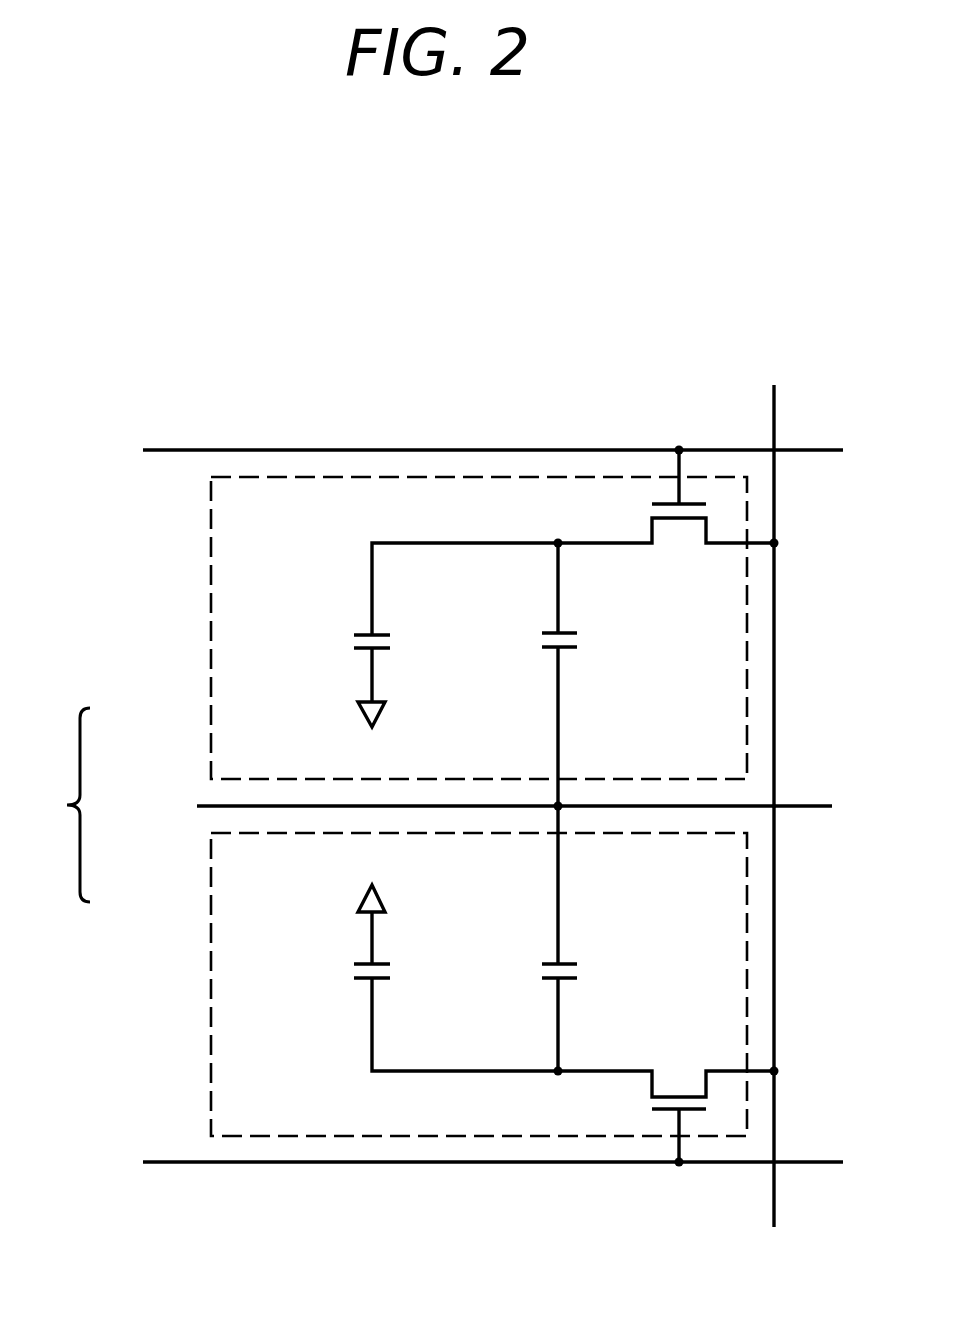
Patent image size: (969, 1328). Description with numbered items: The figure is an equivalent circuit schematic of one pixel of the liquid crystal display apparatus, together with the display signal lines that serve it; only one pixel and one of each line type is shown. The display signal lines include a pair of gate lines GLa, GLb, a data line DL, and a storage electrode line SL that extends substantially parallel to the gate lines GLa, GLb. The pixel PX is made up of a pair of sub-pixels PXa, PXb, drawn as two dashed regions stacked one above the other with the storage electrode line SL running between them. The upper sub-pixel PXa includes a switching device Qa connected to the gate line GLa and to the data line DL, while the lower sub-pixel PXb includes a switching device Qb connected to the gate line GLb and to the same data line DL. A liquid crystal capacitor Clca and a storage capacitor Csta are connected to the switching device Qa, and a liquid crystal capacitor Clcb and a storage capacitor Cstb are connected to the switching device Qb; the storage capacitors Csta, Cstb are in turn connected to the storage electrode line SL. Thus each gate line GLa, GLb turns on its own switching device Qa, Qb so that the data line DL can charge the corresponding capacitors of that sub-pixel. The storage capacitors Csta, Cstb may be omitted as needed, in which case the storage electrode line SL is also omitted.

The data line DL is at (779, 785).
The gate line GLa is at (458, 448).
The gate line GLb is at (458, 1159).
The storage electrode line SL is at (541, 806).
The pixel PX is at (382, 806).
The sub-pixel PXa is at (211, 727).
The sub-pixel PXb is at (211, 883).
The switching device Qa is at (666, 497).
The switching device Qb is at (666, 1117).
The liquid crystal capacitor Clca is at (415, 635).
The storage capacitor Csta is at (518, 674).
The liquid crystal capacitor Clcb is at (415, 978).
The storage capacitor Cstb is at (518, 938).